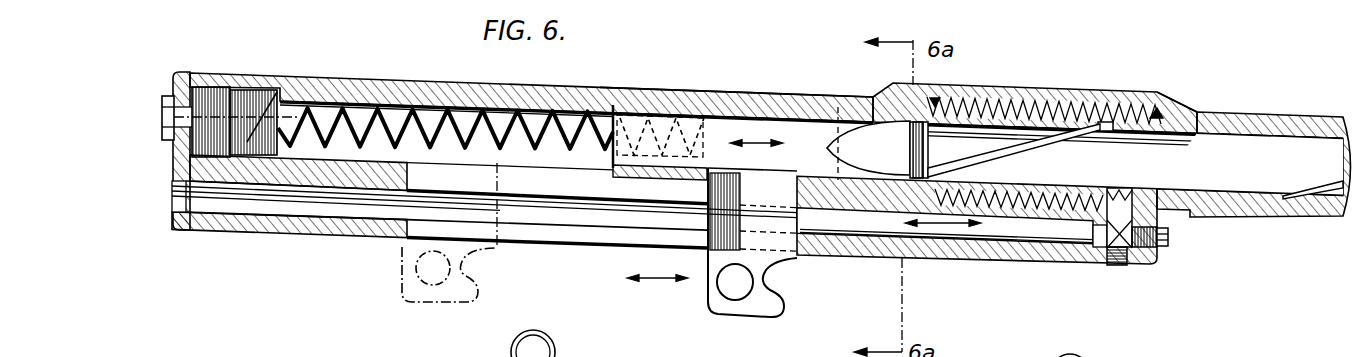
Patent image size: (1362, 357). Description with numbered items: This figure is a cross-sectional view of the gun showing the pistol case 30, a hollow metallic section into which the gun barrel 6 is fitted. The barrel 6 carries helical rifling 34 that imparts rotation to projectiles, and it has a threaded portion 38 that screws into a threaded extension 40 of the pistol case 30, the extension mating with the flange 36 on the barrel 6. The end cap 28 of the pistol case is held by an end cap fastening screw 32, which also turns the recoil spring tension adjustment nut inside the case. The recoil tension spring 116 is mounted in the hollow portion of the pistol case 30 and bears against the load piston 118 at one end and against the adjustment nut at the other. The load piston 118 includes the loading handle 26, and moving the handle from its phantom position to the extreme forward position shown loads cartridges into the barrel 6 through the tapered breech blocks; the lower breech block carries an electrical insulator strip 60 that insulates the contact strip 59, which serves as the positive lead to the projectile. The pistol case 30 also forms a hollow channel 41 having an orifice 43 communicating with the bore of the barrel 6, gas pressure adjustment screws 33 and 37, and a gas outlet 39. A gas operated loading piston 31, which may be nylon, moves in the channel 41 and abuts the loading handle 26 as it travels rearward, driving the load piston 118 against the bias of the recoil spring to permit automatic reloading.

The gun barrel 6 is at (1270, 112).
The loading handle 26 is at (402, 272).
The end cap 28 is at (221, 86).
The pistol case 30 is at (509, 94).
The gas operated loading piston 31 is at (1021, 245).
The end cap fastening screw 32 is at (166, 96).
The gas pressure adjustment screw 33 is at (1169, 236).
The rifling 34 is at (1045, 146).
The flange 36 is at (1170, 104).
The gas pressure adjustment screw 37 is at (1114, 265).
The threaded portion 38 is at (1106, 121).
The gas outlet 39 is at (188, 202).
The threaded extension 40 is at (1068, 89).
The hollow channel 41 is at (548, 220).
The orifice 43 is at (1119, 188).
The contact strip 59 is at (929, 156).
The electrical insulator strip 60 is at (912, 141).
The recoil tension spring 116 is at (433, 120).
The load piston 118 is at (712, 94).